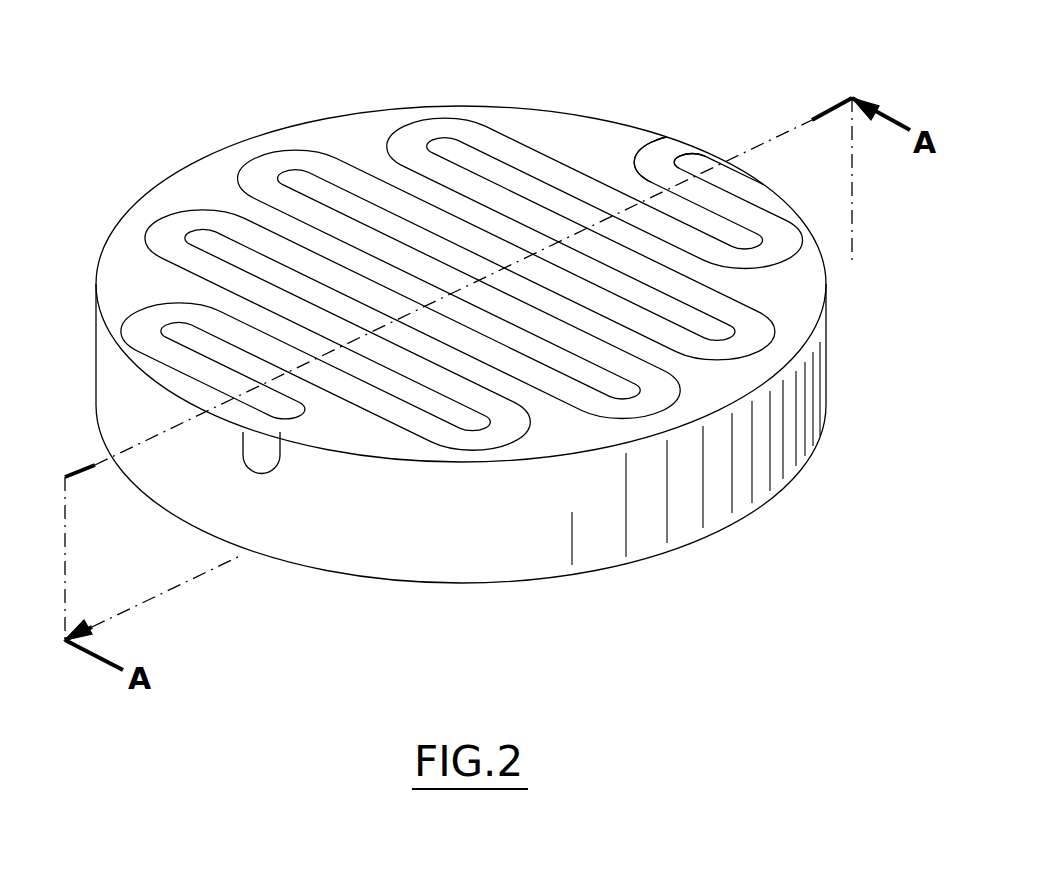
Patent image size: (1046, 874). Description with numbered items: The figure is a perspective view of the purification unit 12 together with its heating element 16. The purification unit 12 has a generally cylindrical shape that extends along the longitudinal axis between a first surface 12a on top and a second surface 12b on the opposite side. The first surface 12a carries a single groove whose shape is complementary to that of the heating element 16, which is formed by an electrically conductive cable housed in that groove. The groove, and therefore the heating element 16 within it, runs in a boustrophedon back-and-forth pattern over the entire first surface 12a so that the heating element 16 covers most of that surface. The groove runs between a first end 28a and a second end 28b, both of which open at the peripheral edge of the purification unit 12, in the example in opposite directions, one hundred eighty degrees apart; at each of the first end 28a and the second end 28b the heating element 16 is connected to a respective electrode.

The purification unit 12 is at (486, 349).
The first surface 12a is at (373, 130).
The second surface 12b is at (531, 586).
The heating element 16 is at (554, 170).
The first end 28a is at (262, 465).
The second end 28b is at (681, 143).